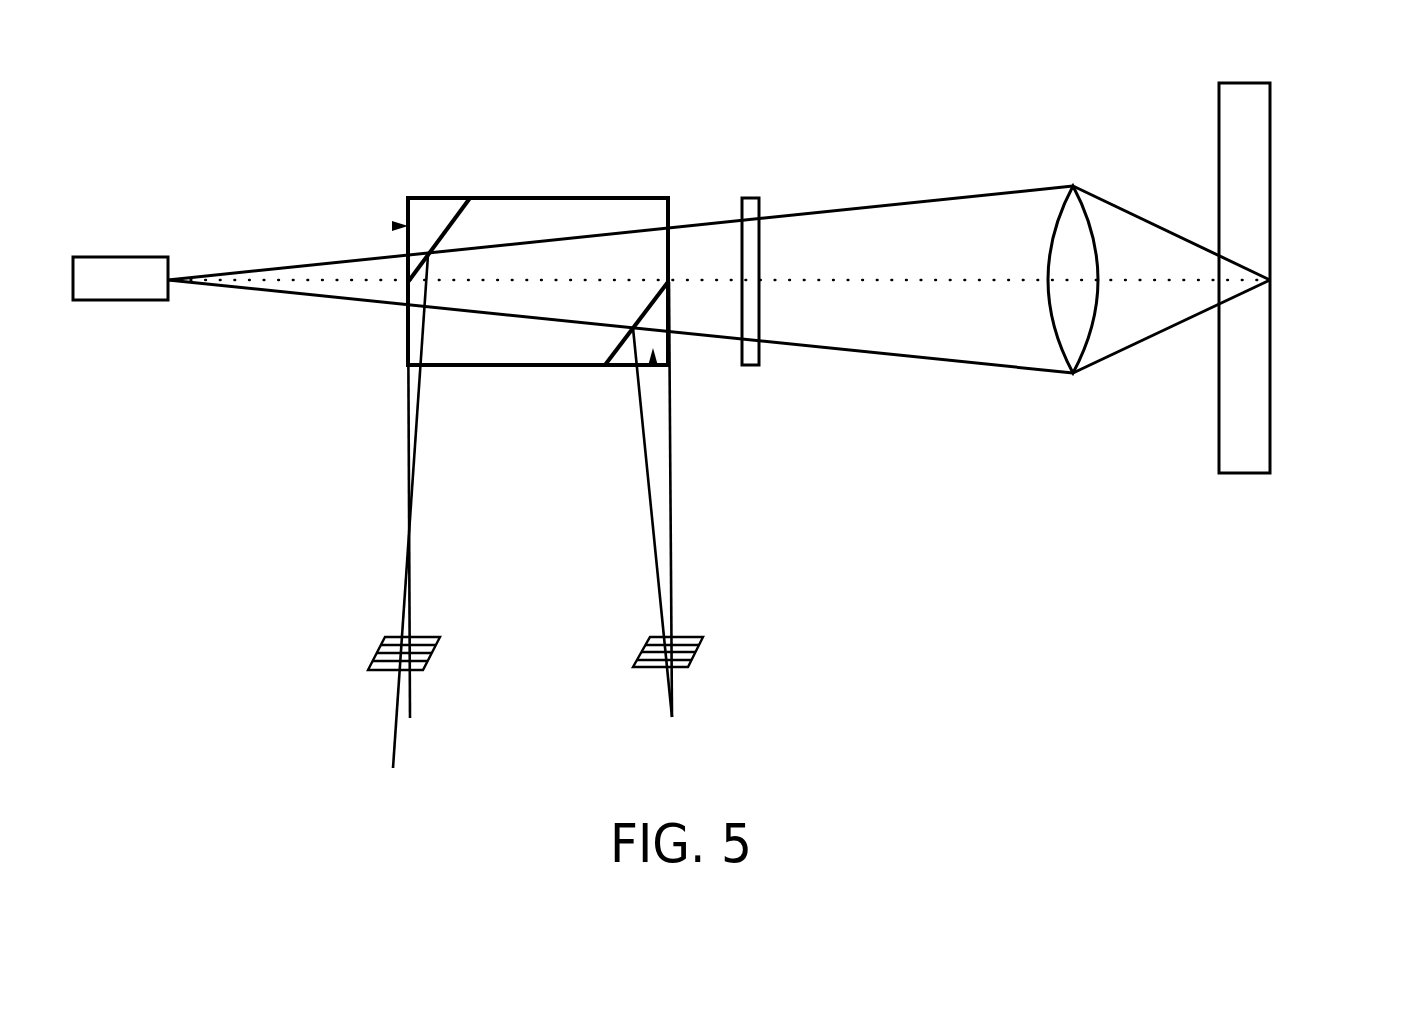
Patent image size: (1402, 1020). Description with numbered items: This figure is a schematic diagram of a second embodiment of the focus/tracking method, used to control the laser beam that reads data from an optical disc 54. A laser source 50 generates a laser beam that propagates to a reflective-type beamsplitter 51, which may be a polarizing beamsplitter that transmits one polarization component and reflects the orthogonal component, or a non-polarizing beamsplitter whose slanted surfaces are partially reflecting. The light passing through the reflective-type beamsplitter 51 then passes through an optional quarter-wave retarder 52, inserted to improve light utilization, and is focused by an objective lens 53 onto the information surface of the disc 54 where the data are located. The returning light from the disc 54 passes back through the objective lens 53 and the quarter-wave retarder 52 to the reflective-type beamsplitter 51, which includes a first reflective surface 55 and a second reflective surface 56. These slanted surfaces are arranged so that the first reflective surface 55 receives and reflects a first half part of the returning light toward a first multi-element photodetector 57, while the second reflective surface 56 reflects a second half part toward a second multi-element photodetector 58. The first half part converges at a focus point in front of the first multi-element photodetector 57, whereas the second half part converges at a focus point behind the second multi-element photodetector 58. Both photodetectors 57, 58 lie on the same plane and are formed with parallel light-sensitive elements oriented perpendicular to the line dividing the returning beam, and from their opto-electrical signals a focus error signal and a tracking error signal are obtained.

The laser source 50 is at (127, 257).
The reflective-type beamsplitter 51 is at (543, 218).
The quarter-wave retarder 52 is at (750, 208).
The objective lens 53 is at (1090, 213).
The optical disc 54 is at (1270, 127).
The first reflective surface 55 is at (400, 226).
The second reflective surface 56 is at (653, 362).
The first multi-element photodetector 57 is at (385, 639).
The second multi-element photodetector 58 is at (701, 635).